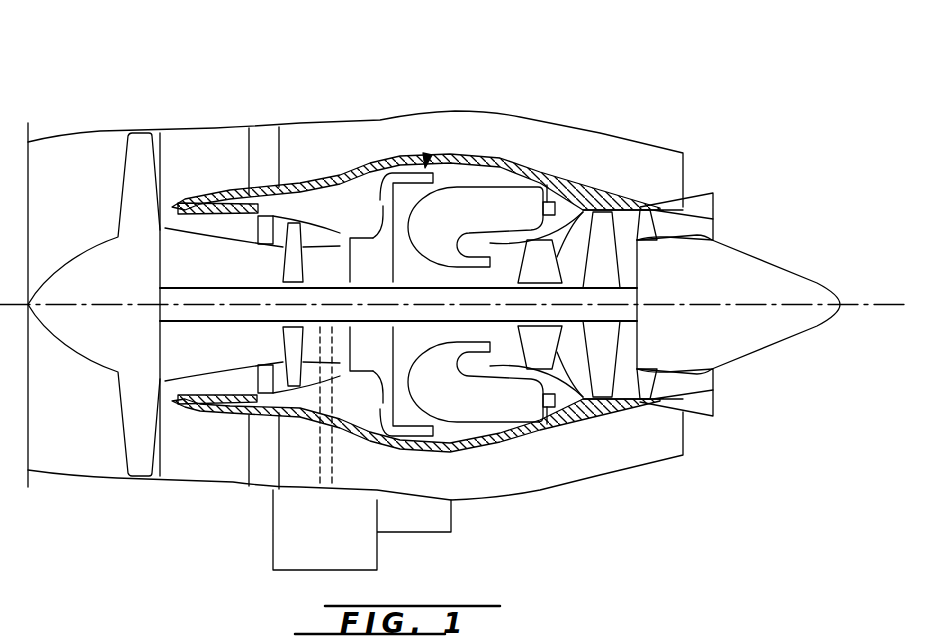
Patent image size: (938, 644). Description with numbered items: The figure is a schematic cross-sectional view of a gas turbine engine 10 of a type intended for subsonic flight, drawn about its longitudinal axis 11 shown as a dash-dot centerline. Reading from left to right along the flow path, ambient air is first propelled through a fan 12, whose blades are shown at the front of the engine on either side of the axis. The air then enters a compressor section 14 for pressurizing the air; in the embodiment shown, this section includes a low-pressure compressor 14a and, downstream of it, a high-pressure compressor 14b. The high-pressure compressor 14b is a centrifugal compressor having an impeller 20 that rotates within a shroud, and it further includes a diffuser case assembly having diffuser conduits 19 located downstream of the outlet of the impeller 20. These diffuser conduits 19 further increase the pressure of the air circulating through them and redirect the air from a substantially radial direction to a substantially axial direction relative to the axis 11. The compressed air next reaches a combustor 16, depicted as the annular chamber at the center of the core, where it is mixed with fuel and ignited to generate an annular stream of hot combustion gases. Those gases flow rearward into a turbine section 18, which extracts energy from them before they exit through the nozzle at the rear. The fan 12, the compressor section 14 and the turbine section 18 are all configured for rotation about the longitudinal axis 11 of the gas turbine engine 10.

The gas turbine engine 10 is at (592, 99).
The longitudinal axis 11 is at (870, 304).
The fan 12 is at (133, 413).
The compressor section 14 is at (340, 233).
The low-pressure compressor 14a is at (293, 255).
The high-pressure compressor 14b is at (371, 395).
The combustor 16 is at (477, 204).
The turbine section 18 is at (572, 353).
The diffuser conduits 19 is at (416, 449).
The impeller 20 is at (371, 241).